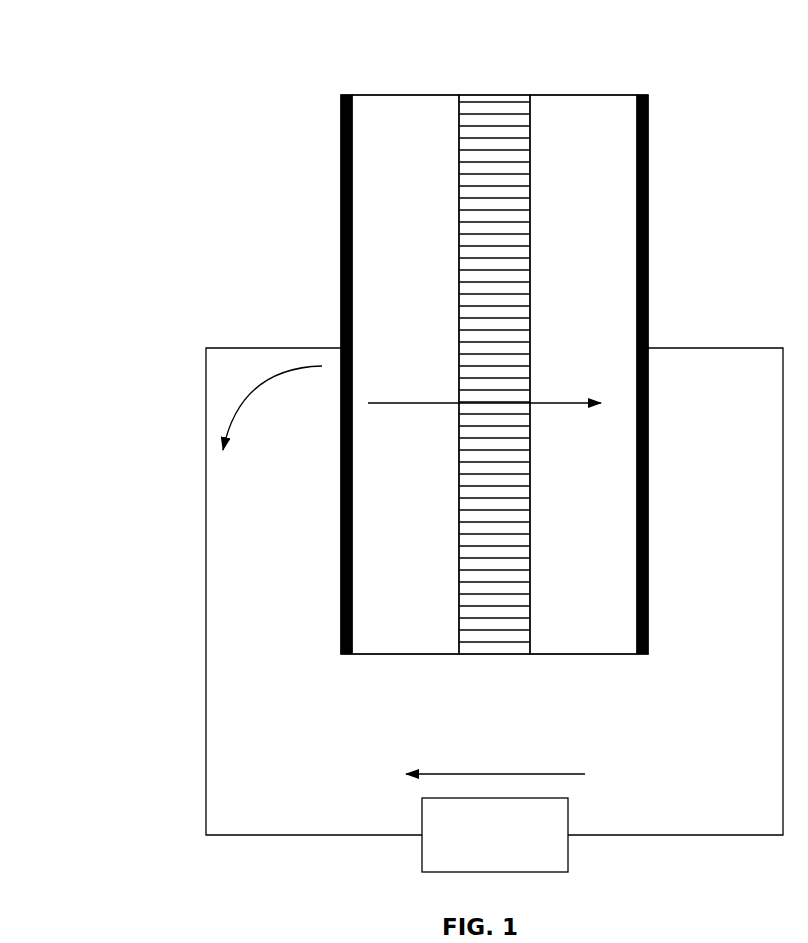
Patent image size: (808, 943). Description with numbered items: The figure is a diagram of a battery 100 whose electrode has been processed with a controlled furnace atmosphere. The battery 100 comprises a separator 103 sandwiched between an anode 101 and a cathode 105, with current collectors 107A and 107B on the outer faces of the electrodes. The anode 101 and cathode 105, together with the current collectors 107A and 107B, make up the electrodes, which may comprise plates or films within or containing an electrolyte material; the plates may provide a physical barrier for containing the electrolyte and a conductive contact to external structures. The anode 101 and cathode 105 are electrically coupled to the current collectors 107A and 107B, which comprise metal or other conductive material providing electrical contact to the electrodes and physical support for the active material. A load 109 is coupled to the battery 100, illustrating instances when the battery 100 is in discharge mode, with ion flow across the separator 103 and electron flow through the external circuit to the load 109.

The battery 100 is at (124, 121).
The anode 101 is at (384, 309).
The separator 103 is at (497, 95).
The cathode 105 is at (565, 312).
The current collector 107A is at (340, 118).
The current collector 107B is at (648, 120).
The load 109 is at (476, 859).